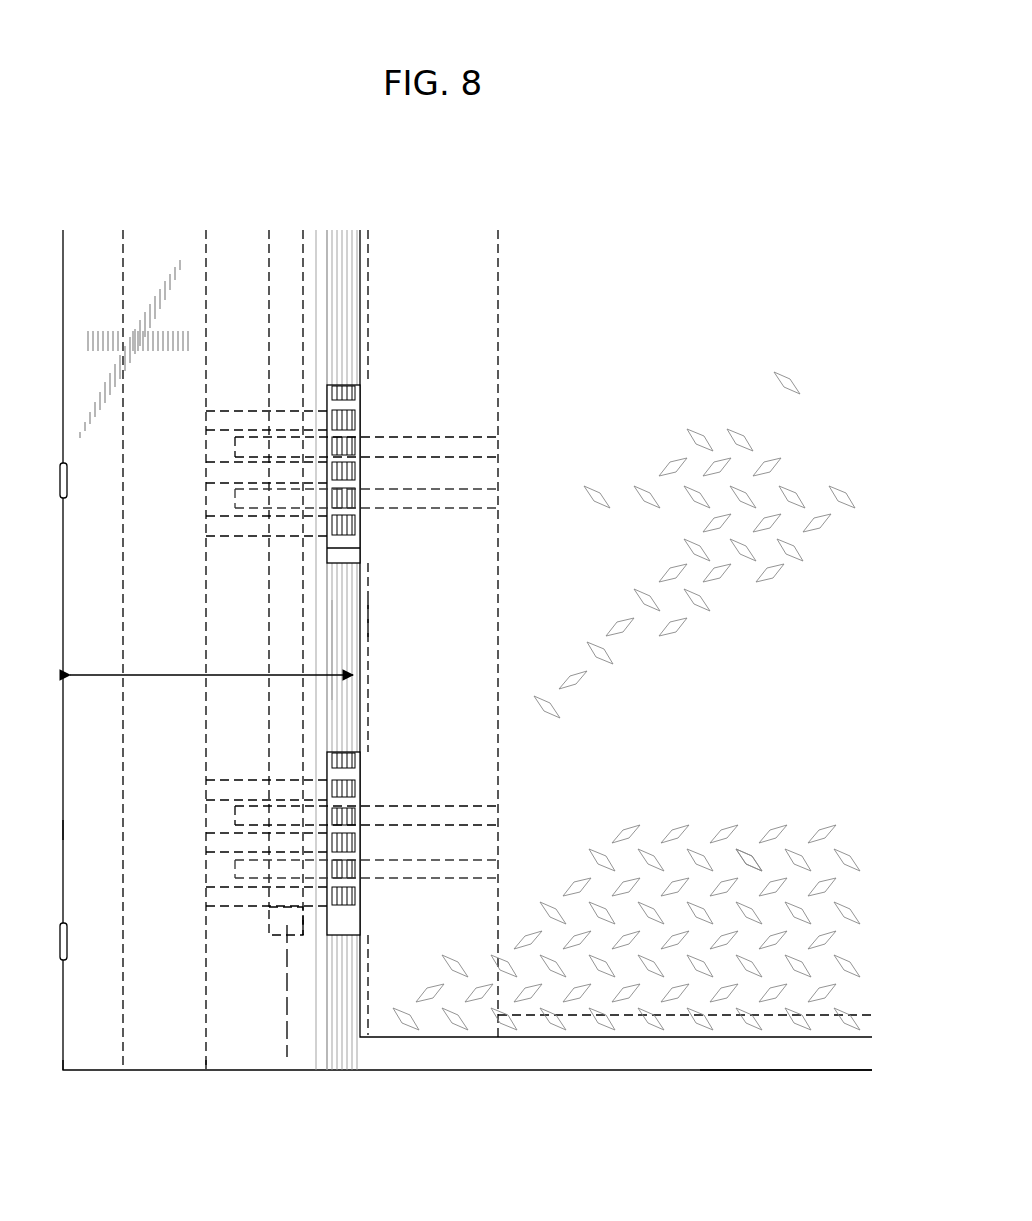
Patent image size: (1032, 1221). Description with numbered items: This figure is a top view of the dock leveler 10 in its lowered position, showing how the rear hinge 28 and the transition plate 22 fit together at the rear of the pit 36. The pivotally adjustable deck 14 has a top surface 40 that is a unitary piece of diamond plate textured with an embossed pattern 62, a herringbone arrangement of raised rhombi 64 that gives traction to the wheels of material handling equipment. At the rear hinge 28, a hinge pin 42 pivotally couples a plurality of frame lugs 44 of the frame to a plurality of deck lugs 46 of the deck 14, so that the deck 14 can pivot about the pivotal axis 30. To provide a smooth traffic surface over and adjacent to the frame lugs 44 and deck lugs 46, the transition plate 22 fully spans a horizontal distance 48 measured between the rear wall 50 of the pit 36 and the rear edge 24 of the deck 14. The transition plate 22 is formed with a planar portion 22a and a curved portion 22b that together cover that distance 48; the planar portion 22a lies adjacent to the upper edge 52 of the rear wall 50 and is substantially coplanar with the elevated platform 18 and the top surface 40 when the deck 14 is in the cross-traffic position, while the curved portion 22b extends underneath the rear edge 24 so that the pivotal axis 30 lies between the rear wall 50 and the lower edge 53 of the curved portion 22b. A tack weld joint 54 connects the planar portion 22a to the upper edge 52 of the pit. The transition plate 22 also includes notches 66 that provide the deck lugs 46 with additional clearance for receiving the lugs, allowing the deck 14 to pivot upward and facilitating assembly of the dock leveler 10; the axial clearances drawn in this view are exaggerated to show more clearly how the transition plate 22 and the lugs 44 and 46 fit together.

The dock leveler 10 is at (697, 240).
The deck 14 is at (560, 1040).
The elevated platform 18 is at (225, 1090).
The transition plate 22 is at (270, 1045).
The planar portion 22a is at (160, 1043).
The curved portion 22b is at (352, 718).
The rear edge 24 is at (328, 547).
The rear hinge 28 is at (246, 383).
The pivotal axis 30 is at (287, 955).
The pit 36 is at (740, 1058).
The top surface 40 is at (648, 995).
The hinge pin 42 is at (269, 713).
The frame lugs 44 is at (227, 411).
The deck lugs 46 is at (460, 437).
The horizontal distance 48 is at (180, 674).
The rear wall 50 is at (63, 613).
The upper edge 52 is at (63, 830).
The lower edge 53 is at (372, 621).
The tack weld joint 54 is at (63, 932).
The embossed pattern 62 is at (650, 826).
The raised rhombi 64 is at (746, 862).
The notches 66 is at (338, 388).